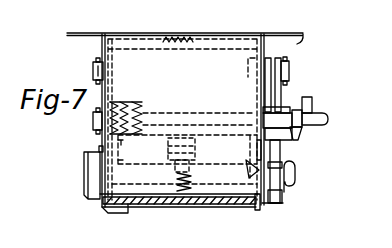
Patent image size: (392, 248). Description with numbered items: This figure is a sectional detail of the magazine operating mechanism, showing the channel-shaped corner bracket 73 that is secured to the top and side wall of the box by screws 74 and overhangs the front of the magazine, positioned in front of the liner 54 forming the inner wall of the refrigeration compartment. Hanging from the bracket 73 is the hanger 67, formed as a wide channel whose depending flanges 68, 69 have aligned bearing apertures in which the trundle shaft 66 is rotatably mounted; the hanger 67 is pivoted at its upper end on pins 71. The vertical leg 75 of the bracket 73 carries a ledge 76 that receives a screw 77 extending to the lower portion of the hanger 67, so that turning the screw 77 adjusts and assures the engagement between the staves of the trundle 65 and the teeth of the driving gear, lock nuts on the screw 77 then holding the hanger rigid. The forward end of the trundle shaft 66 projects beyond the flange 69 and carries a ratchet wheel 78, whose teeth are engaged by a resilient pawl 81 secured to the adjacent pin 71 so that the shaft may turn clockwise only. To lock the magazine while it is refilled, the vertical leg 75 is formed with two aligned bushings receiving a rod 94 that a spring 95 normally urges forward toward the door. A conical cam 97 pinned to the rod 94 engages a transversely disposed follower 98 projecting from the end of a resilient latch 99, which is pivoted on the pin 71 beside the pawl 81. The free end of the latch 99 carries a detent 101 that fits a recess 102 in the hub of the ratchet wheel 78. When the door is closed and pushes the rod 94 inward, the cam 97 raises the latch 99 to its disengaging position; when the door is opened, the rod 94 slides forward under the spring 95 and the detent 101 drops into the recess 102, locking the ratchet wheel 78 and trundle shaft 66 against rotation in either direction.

The liner 54 is at (304, 43).
The trundle 65 is at (90, 172).
The trundle shaft 66 is at (215, 206).
The hanger 67 is at (147, 205).
The depending flange 68 is at (108, 208).
The depending flange 69 is at (261, 207).
The pins 71 is at (93, 68).
The corner bracket 73 is at (242, 37).
The screws 74 is at (158, 40).
The vertical leg 75 is at (195, 206).
The ledge 76 is at (98, 148).
The screw 77 is at (163, 204).
The ratchet wheel 78 is at (283, 197).
The resilient pawl 81 is at (266, 144).
The rod 94 is at (324, 128).
The spring 95 is at (124, 103).
The conical cam 97 is at (306, 98).
The follower 98 is at (326, 174).
The resilient latch 99 is at (271, 100).
The detent 101 is at (259, 151).
The recess 102 is at (256, 172).